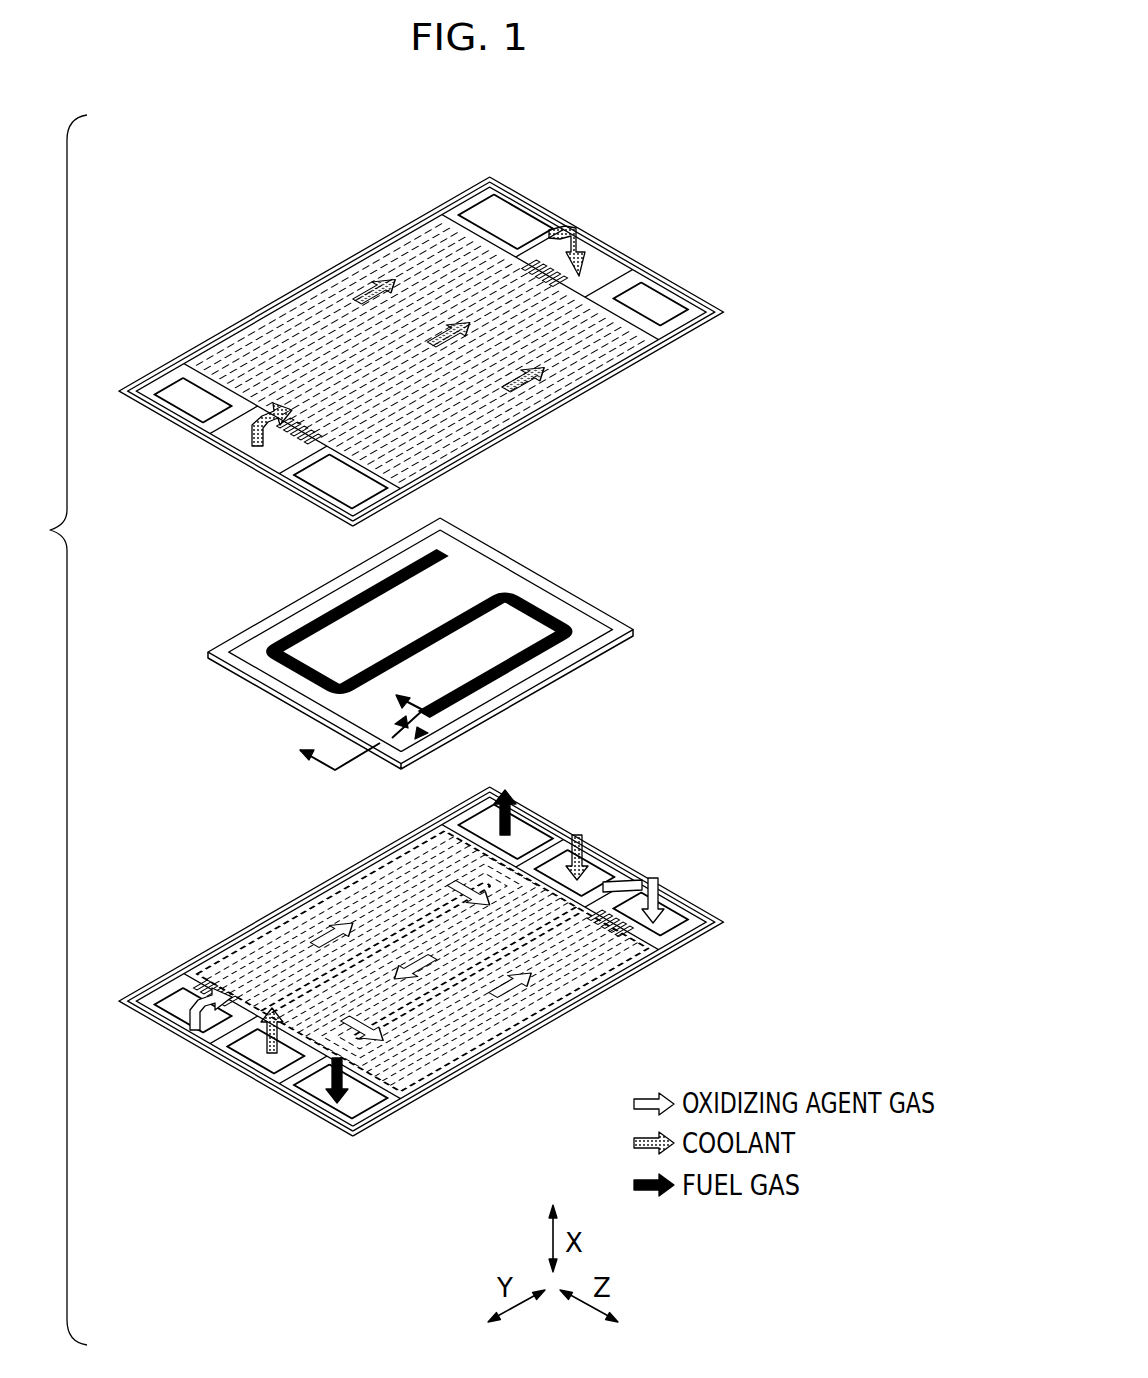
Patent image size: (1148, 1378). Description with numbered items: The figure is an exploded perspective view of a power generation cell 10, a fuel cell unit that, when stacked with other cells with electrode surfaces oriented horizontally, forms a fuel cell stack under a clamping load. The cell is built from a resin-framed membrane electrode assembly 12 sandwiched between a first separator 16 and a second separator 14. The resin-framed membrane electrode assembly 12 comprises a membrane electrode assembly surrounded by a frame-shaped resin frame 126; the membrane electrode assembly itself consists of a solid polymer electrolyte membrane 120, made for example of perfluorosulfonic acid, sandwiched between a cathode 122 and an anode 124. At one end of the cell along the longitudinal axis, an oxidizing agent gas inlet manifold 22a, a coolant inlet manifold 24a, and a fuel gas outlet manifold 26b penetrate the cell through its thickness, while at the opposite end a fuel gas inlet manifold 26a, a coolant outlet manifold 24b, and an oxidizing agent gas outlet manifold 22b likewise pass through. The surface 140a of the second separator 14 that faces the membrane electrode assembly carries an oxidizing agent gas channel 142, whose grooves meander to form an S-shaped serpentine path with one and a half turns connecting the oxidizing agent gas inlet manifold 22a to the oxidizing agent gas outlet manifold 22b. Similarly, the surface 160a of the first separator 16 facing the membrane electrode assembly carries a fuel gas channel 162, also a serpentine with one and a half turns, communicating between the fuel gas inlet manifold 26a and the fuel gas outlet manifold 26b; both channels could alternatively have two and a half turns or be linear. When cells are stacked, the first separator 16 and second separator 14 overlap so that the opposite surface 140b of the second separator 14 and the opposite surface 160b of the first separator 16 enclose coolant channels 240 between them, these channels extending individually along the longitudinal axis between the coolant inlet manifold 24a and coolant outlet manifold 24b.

The power generation cell 10 is at (748, 185).
The resin-framed membrane electrode assembly 12 is at (439, 625).
The second separator 14 is at (438, 957).
The first separator 16 is at (419, 340).
The oxidizing agent gas inlet manifold 22a is at (182, 403).
The oxidizing agent gas outlet manifold 22b is at (665, 305).
The coolant inlet manifold 24a is at (262, 460).
The coolant outlet manifold 24b is at (600, 266).
The fuel gas inlet manifold 26a is at (510, 220).
The fuel gas outlet manifold 26b is at (332, 490).
The solid polymer electrolyte membrane 120 is at (560, 650).
The cathode 122 is at (513, 680).
The anode 124 is at (587, 622).
The resin frame 126 is at (478, 542).
The surface of the second separator 140a is at (643, 945).
The surface of the second separator 140b is at (623, 978).
The oxidizing agent gas channel 142 is at (447, 1000).
The surface of the first separator 160a is at (618, 372).
The surface of the first separator 160b is at (642, 343).
The fuel gas channel 162 is at (505, 428).
The coolant channels 240 is at (415, 272).